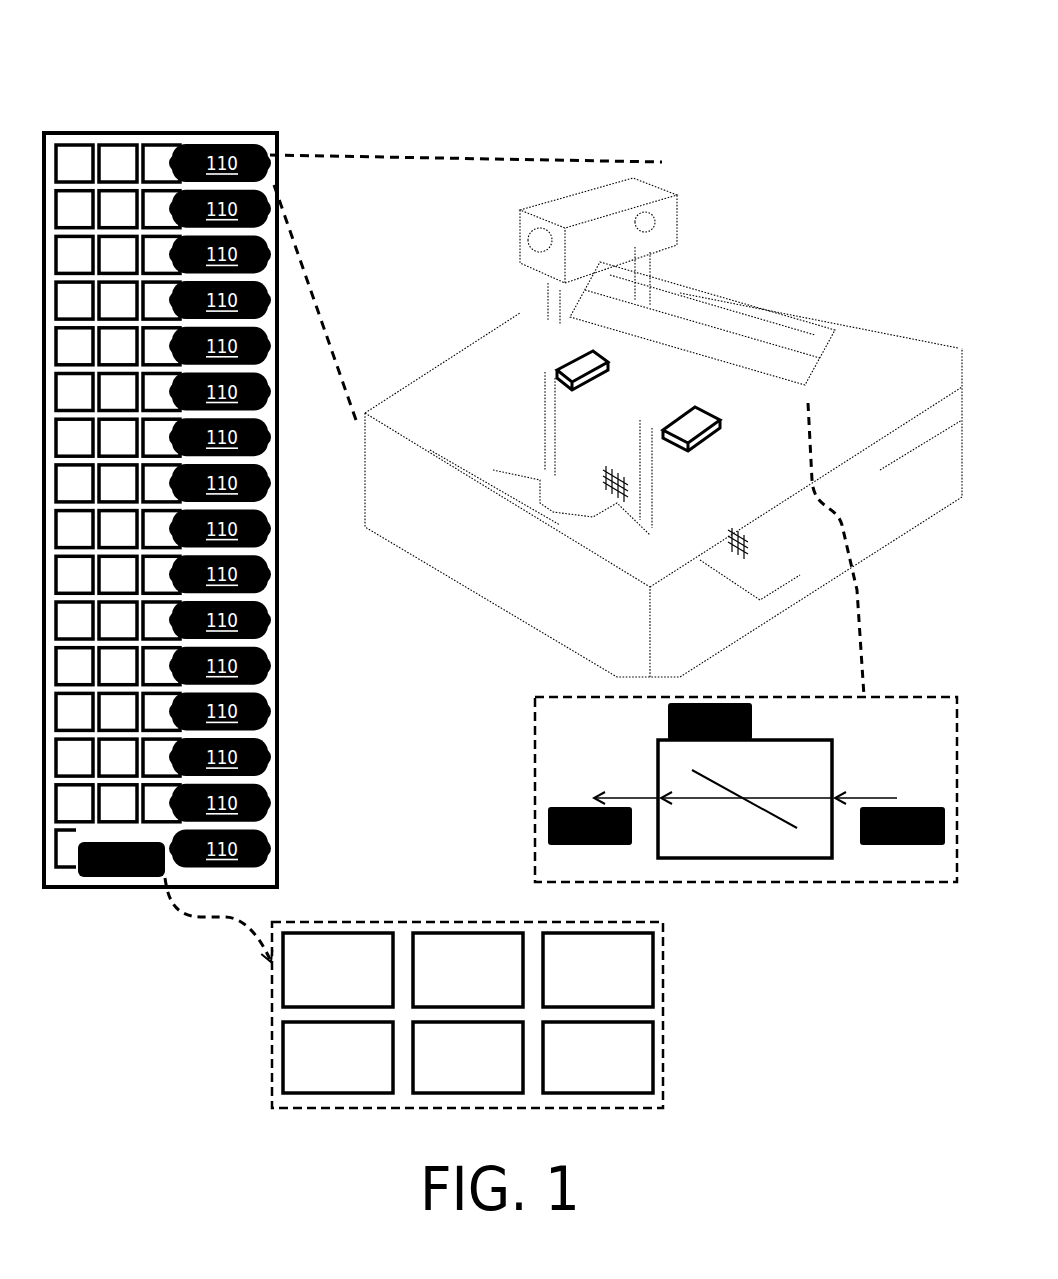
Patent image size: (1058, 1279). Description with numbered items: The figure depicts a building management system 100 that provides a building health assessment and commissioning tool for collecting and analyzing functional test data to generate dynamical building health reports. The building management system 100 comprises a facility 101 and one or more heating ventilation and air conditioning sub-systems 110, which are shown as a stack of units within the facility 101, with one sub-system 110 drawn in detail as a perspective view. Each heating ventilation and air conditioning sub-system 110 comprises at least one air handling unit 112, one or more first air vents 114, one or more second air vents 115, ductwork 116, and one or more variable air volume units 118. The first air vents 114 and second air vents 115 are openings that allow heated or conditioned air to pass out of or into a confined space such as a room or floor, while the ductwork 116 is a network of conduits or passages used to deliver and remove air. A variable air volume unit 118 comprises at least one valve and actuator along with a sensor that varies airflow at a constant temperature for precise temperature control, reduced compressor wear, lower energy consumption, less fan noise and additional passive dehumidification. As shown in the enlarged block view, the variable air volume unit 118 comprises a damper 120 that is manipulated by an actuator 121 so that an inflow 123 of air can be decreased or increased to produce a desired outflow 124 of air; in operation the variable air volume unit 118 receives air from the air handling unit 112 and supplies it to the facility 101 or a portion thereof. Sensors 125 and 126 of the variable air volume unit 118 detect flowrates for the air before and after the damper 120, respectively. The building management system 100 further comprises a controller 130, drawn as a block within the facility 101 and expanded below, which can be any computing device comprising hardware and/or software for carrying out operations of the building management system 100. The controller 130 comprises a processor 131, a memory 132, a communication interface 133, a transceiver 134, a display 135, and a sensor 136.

The building management system 100 is at (294, 104).
The facility 101 is at (180, 133).
The heating ventilation and air conditioning sub-system 110 is at (428, 256).
The air handling unit 112 is at (678, 219).
The first air vent 114 is at (639, 437).
The second air vent 115 is at (727, 538).
The ductwork 116 is at (664, 265).
The variable air volume unit 118 is at (611, 367).
The damper 120 is at (727, 772).
The actuator 121 is at (692, 733).
The inflow 123 is at (866, 797).
The outflow 124 is at (614, 797).
The sensor 125 is at (884, 838).
The sensor 126 is at (572, 838).
The controller 130 is at (105, 870).
The processor 131 is at (319, 984).
The memory 132 is at (449, 984).
The communication interface 133 is at (579, 984).
The transceiver 134 is at (319, 1071).
The display 135 is at (449, 1071).
The sensor 136 is at (579, 1071).